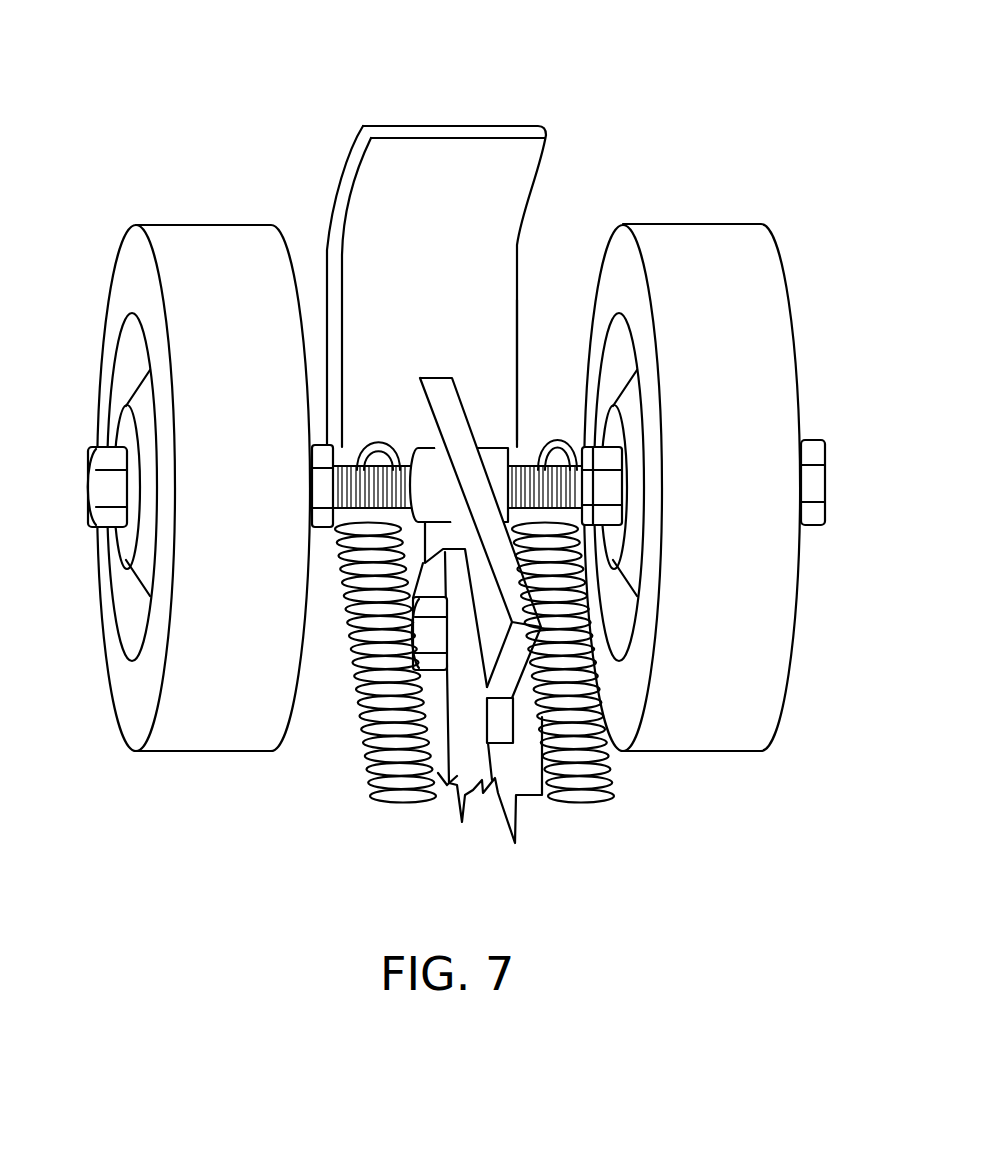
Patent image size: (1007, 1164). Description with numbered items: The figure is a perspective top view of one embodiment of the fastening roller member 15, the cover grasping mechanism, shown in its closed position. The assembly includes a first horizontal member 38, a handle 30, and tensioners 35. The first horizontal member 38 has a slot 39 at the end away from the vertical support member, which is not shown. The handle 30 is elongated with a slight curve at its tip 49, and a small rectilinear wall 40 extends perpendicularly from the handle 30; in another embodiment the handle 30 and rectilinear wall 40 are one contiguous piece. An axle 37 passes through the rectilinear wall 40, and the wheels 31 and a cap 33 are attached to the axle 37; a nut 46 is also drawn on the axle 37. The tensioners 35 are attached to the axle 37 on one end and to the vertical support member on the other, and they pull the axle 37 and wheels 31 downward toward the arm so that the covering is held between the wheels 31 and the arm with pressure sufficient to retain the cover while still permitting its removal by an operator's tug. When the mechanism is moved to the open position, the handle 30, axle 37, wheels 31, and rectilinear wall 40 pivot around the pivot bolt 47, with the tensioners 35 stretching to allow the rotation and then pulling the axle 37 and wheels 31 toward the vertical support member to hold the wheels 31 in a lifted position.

The fastening roller member 15 is at (700, 92).
The handle 30 is at (520, 237).
The wheels 31 is at (683, 222).
The cap 33 is at (822, 488).
The tensioners 35 is at (590, 800).
The axle 37 is at (527, 447).
The first horizontal member 38 is at (480, 793).
The slot 39 is at (503, 717).
The rectilinear wall 40 is at (463, 407).
The nut 46 is at (318, 445).
The pivot bolt 47 is at (423, 680).
The tip 49 is at (455, 127).